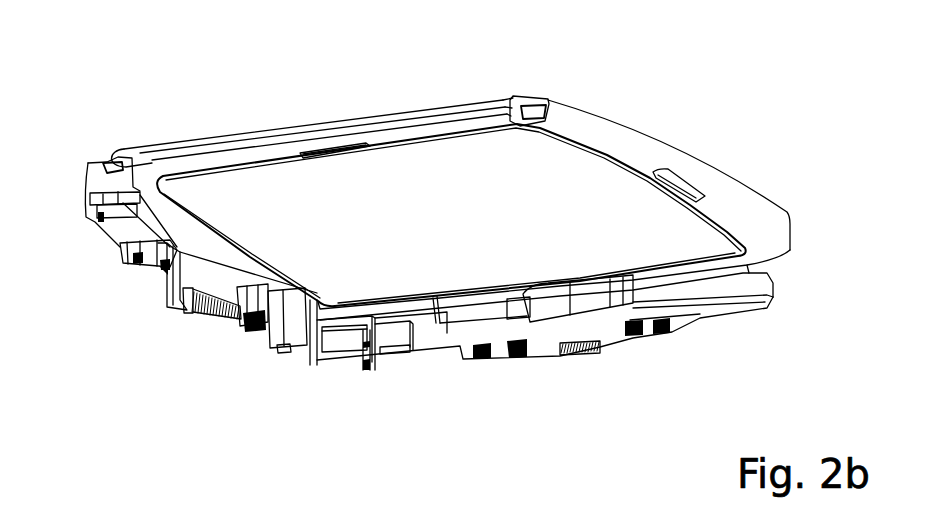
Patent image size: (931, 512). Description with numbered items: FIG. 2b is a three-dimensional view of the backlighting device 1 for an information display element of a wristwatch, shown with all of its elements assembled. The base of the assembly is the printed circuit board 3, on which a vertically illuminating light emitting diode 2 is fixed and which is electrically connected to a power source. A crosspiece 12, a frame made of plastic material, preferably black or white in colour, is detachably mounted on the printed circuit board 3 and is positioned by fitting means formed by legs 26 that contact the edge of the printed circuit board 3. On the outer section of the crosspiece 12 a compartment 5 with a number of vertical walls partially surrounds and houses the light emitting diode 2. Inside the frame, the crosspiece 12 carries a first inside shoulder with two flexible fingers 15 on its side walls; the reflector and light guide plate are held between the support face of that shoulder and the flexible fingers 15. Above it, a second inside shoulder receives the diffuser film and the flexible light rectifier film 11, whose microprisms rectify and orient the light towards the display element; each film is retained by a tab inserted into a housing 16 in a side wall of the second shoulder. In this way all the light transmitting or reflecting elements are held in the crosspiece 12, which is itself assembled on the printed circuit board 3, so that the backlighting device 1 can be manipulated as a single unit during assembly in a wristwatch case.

The backlighting device 1 is at (376, 87).
The light emitting diode 2 is at (342, 343).
The printed circuit board 3 is at (737, 312).
The compartment 5 is at (363, 367).
The flexible light rectifier film 11 is at (442, 277).
The crosspiece 12 is at (192, 278).
The flexible fingers 15 is at (324, 151).
The housing 16 is at (582, 290).
The legs 26 is at (121, 258).